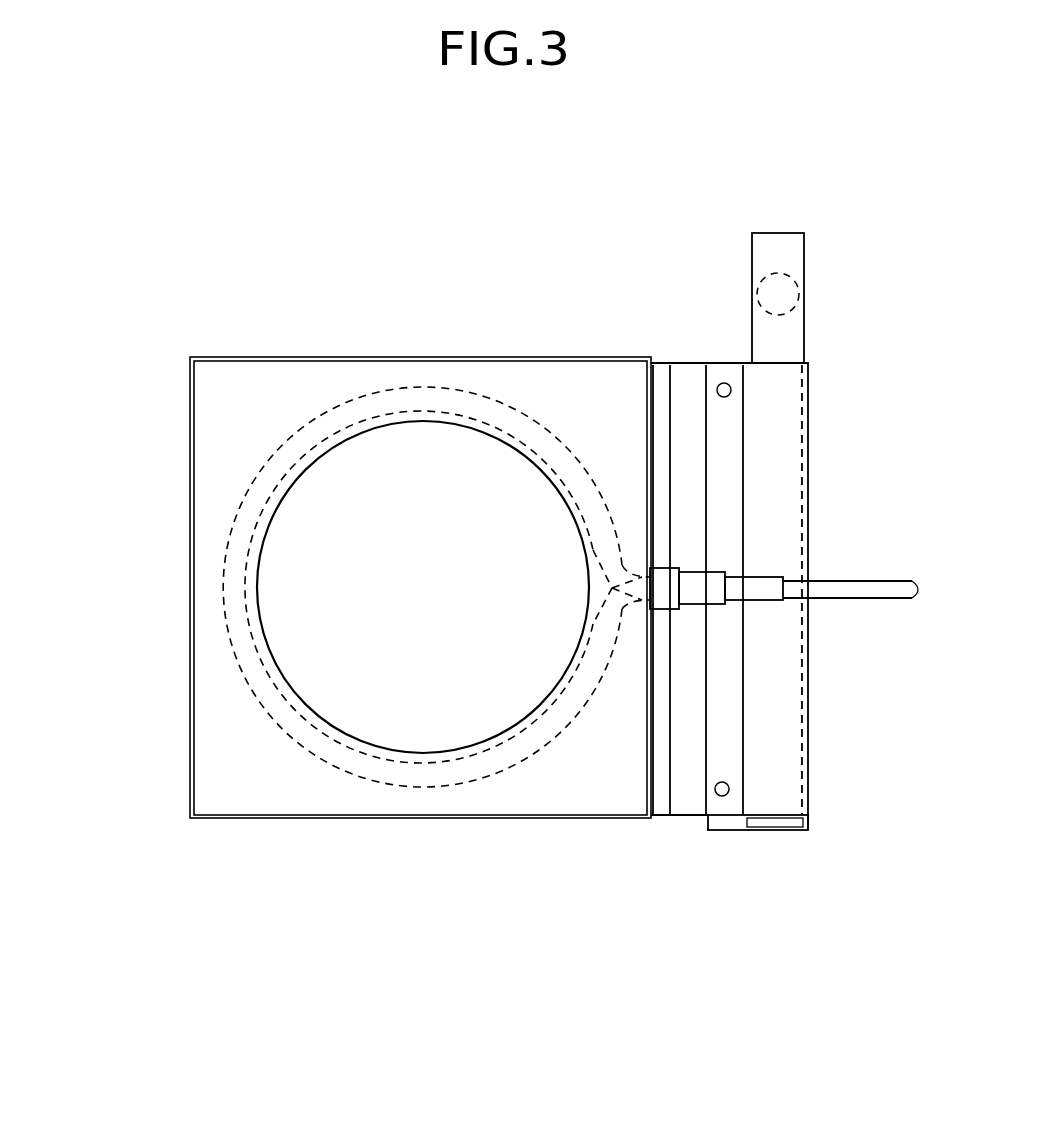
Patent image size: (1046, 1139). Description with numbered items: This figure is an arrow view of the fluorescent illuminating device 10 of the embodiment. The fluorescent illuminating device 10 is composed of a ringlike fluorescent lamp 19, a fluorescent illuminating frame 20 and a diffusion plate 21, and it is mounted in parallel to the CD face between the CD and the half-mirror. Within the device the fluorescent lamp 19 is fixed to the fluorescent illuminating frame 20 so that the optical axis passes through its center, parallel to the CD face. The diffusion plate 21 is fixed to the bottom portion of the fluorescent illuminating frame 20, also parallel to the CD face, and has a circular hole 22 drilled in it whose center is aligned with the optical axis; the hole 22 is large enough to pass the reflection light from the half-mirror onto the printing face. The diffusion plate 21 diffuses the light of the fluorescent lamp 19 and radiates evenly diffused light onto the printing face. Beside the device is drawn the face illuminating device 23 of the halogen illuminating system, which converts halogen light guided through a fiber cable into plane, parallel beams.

The fluorescent illuminating device 10 is at (570, 355).
The fluorescent lamp 19 is at (385, 389).
The fluorescent illuminating frame 20 is at (191, 510).
The diffusion plate 21 is at (588, 788).
The circular hole 22 is at (293, 687).
The face illuminating device 23 is at (813, 760).